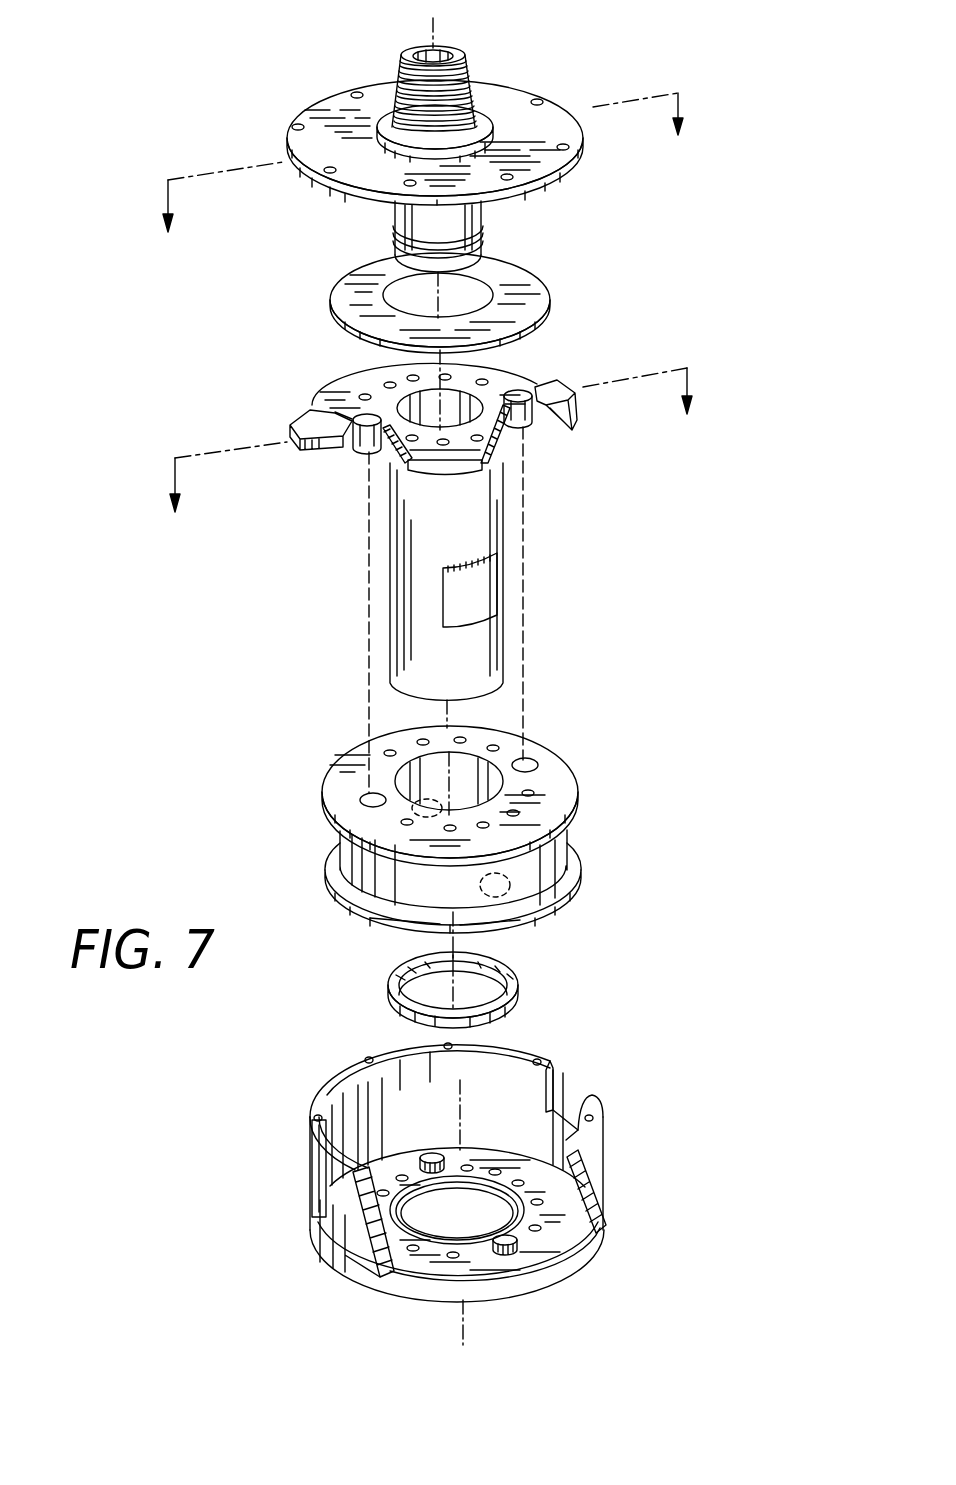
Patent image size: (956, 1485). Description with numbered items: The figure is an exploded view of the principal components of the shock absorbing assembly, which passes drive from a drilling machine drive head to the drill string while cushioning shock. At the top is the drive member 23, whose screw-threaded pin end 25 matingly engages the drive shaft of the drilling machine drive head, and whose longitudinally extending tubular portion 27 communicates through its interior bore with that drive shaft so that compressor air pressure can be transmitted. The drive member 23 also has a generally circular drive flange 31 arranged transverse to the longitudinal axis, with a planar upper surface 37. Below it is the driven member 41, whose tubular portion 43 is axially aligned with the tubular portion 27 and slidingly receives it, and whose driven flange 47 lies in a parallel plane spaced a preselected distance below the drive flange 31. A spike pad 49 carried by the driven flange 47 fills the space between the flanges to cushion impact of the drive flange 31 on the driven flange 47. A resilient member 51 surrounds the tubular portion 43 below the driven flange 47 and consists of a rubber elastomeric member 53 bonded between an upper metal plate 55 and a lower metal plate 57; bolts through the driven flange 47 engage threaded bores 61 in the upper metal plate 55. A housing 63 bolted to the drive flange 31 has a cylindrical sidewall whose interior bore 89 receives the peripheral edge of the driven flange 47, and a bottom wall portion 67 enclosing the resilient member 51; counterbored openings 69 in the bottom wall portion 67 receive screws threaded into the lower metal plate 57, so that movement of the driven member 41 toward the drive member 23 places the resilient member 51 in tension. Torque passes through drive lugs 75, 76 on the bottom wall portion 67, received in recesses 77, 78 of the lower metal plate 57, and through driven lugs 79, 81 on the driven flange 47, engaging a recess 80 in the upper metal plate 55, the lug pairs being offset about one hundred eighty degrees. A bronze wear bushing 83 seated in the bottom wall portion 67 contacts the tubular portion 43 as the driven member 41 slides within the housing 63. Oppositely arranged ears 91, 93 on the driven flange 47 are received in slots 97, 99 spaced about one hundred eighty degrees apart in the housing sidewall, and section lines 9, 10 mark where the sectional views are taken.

The section line 9- 9 is at (429, 182).
The section line 10- 10 is at (431, 462).
The drive member 23 is at (302, 214).
The pin end 25 is at (475, 72).
The tubular portion 27 is at (487, 220).
The drive flange 31 is at (567, 178).
The planar upper surface 37 is at (337, 127).
The driven member 41 is at (326, 532).
The tubular portion 43 is at (503, 527).
The driven flange 47 is at (365, 385).
The spike pad 49 is at (527, 285).
The resilient member 51 is at (303, 878).
The elastomeric member 53 is at (568, 840).
The upper metal plate 55 is at (578, 780).
The lower metal plate 57 is at (577, 877).
The threaded bores 61 is at (390, 752).
The housing 63 is at (603, 1160).
The bottom wall portion 67 is at (477, 1253).
The counterbored openings 69 is at (550, 1210).
The drive lug 75 is at (517, 1240).
The drive lug 76 is at (432, 1152).
The recess 77 is at (500, 893).
The recess 78 is at (423, 813).
The driven lug 79 is at (517, 393).
The recess 80 is at (525, 765).
The driven lug 81 is at (347, 415).
The wear bushing 83 is at (518, 993).
The interior bore 89 is at (402, 1082).
The ear 91 is at (290, 443).
The ear 93 is at (573, 400).
The slot 97 is at (320, 1150).
The slot 99 is at (553, 1087).